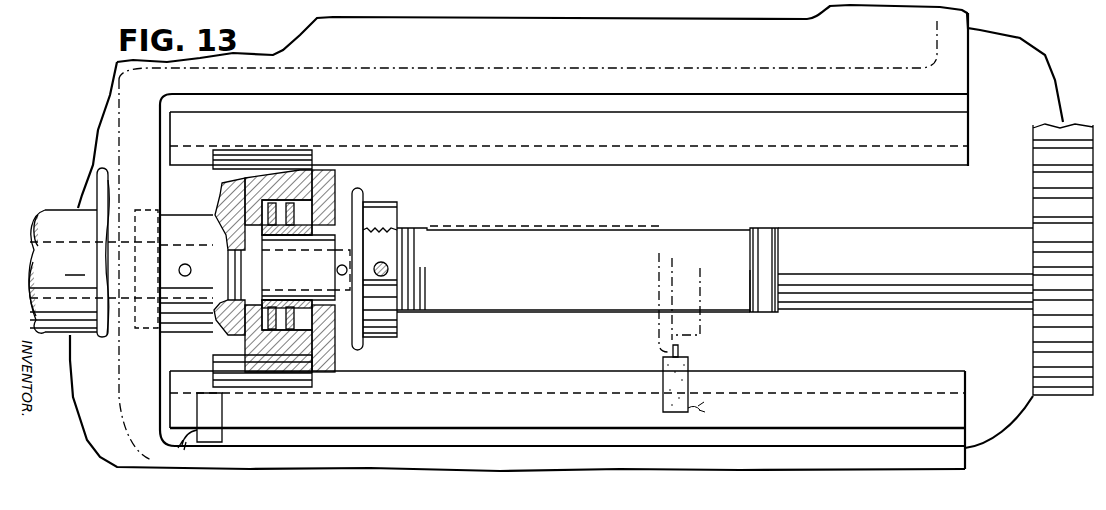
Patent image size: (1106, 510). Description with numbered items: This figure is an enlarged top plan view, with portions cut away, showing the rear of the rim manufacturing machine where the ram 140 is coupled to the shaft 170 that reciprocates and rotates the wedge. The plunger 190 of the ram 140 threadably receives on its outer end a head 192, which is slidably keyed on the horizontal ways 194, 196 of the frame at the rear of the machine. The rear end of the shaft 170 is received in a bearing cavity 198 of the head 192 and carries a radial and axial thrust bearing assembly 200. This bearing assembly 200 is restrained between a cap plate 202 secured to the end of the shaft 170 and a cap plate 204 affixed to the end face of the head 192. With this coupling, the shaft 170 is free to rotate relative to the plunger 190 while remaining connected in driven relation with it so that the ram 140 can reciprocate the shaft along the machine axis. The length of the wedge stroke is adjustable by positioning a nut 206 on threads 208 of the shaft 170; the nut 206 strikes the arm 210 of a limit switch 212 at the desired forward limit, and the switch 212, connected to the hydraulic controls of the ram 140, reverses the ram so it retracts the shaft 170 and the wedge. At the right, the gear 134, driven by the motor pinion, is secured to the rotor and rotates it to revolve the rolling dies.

The gear 134 is at (1075, 130).
The ram 140 is at (55, 214).
The shaft 170 is at (953, 228).
The plunger 190 is at (223, 250).
The head 192 is at (217, 346).
The horizontal way 194 is at (656, 166).
The horizontal way 196 is at (806, 350).
The bearing cavity 198 is at (250, 195).
The radial and axial thrust bearing assembly 200 is at (277, 350).
The cap plate 202 is at (280, 258).
The cap plate 204 is at (355, 200).
The nut 206 is at (388, 326).
The threads 208 is at (740, 230).
The arm 210 is at (678, 350).
The limit switch 212 is at (683, 370).